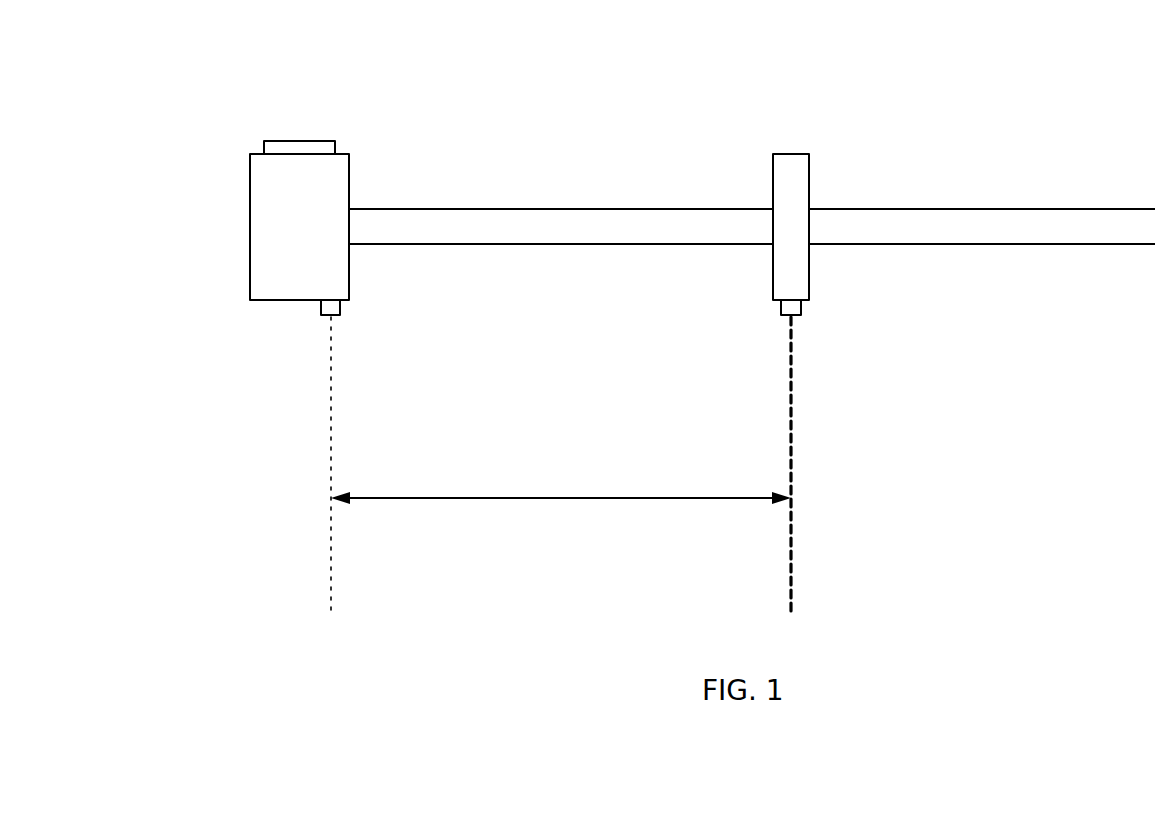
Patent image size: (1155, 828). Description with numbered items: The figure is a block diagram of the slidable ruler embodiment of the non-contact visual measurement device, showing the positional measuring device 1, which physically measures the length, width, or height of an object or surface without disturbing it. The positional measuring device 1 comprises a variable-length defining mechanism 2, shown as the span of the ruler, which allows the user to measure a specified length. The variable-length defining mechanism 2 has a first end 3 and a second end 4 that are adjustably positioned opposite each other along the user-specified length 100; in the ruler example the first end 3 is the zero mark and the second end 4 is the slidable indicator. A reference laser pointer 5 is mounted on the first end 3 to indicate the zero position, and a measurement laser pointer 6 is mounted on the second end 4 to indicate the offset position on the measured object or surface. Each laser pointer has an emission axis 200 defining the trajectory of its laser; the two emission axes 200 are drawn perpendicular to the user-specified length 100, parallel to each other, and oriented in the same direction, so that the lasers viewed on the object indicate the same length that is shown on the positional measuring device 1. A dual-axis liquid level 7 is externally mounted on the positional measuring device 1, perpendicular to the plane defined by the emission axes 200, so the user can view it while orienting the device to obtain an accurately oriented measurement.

The positional measuring device 1 is at (1078, 96).
The variable-length defining mechanism 2 is at (792, 128).
The first end 3 is at (368, 288).
The second end 4 is at (823, 281).
The reference laser pointer 5 is at (330, 312).
The measurement laser pointer 6 is at (791, 312).
The dual-axis liquid level 7 is at (279, 146).
The user-specified length 100 is at (528, 499).
The emission axis 200 is at (329, 456).